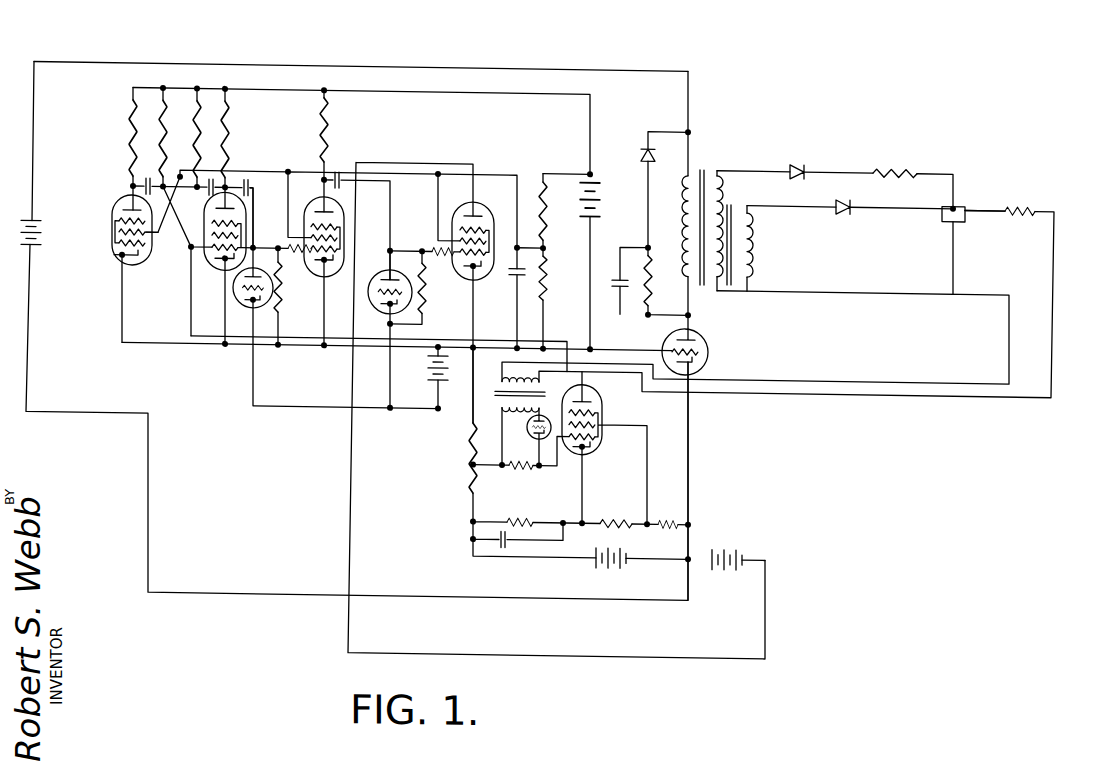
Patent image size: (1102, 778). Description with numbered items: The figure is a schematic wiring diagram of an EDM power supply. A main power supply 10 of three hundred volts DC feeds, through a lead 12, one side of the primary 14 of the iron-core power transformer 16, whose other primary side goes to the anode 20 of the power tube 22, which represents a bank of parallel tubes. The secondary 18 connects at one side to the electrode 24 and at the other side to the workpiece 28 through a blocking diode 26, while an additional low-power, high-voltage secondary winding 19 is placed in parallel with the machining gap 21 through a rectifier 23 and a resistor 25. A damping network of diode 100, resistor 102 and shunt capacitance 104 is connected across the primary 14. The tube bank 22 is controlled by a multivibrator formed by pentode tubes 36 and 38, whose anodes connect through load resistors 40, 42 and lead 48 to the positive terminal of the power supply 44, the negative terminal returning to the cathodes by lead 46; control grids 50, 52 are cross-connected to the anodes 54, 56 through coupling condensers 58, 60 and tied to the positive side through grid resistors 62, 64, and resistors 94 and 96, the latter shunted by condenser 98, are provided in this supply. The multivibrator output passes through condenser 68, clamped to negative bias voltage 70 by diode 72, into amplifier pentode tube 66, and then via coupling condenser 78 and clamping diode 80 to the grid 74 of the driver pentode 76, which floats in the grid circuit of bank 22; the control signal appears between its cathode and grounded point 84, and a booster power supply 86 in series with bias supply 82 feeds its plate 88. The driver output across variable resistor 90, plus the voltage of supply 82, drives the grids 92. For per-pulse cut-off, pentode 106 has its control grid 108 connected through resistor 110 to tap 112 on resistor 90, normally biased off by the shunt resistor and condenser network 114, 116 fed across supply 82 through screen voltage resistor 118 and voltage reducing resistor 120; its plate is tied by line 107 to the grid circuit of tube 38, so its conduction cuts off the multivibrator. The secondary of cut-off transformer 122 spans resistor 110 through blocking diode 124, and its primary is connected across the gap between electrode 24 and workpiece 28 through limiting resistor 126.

The main power supply 10 is at (40, 232).
The lead 12 is at (236, 51).
The primary 14 is at (680, 205).
The power transformer 16 is at (724, 211).
The secondary 18 is at (753, 234).
The additional secondary winding 19 is at (726, 183).
The anode 20 is at (712, 419).
The machining gap 21 is at (959, 209).
The power tube 22 is at (710, 335).
The rectifier 23 is at (801, 152).
The electrode 24 is at (951, 251).
The resistor 25 is at (877, 156).
The blocking diode 26 is at (847, 203).
The workpiece 28 is at (968, 192).
The multivibrator tube 36 is at (102, 262).
The multivibrator tube 38 is at (221, 271).
The load resistor 40 is at (130, 139).
The load resistor 42 is at (235, 151).
The power supply 44 is at (594, 202).
The lead 46 is at (142, 342).
The lead 48 is at (419, 86).
The control grid 50 is at (120, 253).
The control grid 52 is at (238, 244).
The anode 54 is at (250, 191).
The anode 56 is at (118, 207).
The coupling condenser 58 is at (211, 177).
The coupling condenser 60 is at (148, 178).
The grid resistor 62 is at (164, 128).
The grid resistor 64 is at (198, 131).
The pentode tube 66 is at (283, 284).
The condenser 68 is at (248, 178).
The negative bias voltage 70 is at (441, 368).
The diode 72 is at (246, 305).
The grid 74 is at (489, 239).
The pentode 76 is at (426, 289).
The coupling condenser 78 is at (342, 169).
The clamping diode 80 is at (383, 274).
The bias supply 82 is at (602, 558).
The point 84 is at (689, 543).
The booster power supply 86 is at (738, 556).
The plate 88 is at (486, 302).
The variable resistor 90 is at (468, 421).
The grids 92 is at (704, 345).
The resistor 94 is at (547, 221).
The resistor 96 is at (549, 282).
The condenser 98 is at (514, 274).
The diode 100 is at (642, 141).
The resistor 102 is at (650, 276).
The shunt capacitance 104 is at (624, 289).
The pentode 106 is at (610, 447).
The line 107 is at (189, 297).
The control grid 108 is at (590, 439).
The resistor 110 is at (512, 465).
The tap 112 is at (466, 472).
The shunt resistor 114 is at (521, 513).
The condenser 116 is at (500, 542).
The screen voltage resistor 118 is at (630, 498).
The voltage reducing resistor 120 is at (672, 513).
The cut-off transformer 122 is at (500, 380).
The blocking diode 124 is at (532, 426).
The limiting resistor 126 is at (1028, 192).